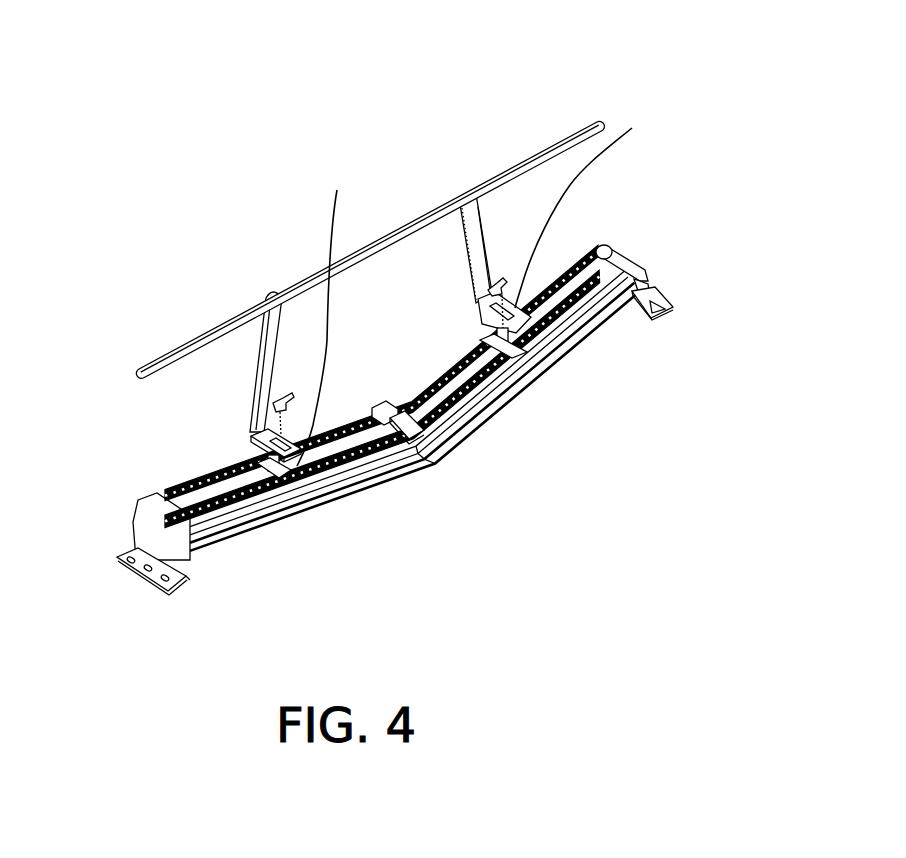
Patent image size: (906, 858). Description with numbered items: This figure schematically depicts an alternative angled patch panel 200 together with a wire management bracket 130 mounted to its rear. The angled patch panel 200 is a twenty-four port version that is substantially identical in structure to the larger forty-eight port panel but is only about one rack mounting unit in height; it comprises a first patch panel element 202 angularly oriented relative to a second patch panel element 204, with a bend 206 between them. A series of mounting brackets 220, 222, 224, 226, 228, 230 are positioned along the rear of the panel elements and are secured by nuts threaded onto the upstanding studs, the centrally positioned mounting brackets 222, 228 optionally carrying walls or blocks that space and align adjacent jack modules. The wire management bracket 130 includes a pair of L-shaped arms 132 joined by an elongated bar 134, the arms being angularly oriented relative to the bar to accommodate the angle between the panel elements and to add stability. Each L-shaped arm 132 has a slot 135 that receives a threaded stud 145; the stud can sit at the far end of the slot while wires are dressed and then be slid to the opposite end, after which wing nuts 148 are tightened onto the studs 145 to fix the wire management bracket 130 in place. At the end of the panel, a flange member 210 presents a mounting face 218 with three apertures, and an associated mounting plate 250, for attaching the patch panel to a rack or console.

The wire management bracket 130 is at (407, 255).
The L-shaped arms 132 is at (287, 333).
The elongated bar 134 is at (386, 236).
The slots 135 is at (337, 190).
The threaded studs 145 is at (258, 456).
The wing nuts 148 is at (275, 400).
The angled patch panel 200 is at (393, 411).
The first patch panel element 202 is at (405, 423).
The second patch panel element 204 is at (258, 508).
The bend 206 is at (421, 462).
The flange member 210 is at (111, 550).
The mounting face 218 is at (188, 572).
The mounting bracket 220 is at (150, 510).
The mounting bracket 222 is at (313, 485).
The mounting bracket 224 is at (374, 411).
The mounting bracket 226 is at (392, 408).
The mounting bracket 228 is at (534, 360).
The mounting bracket 230 is at (658, 233).
The mounting plate 250 is at (153, 583).